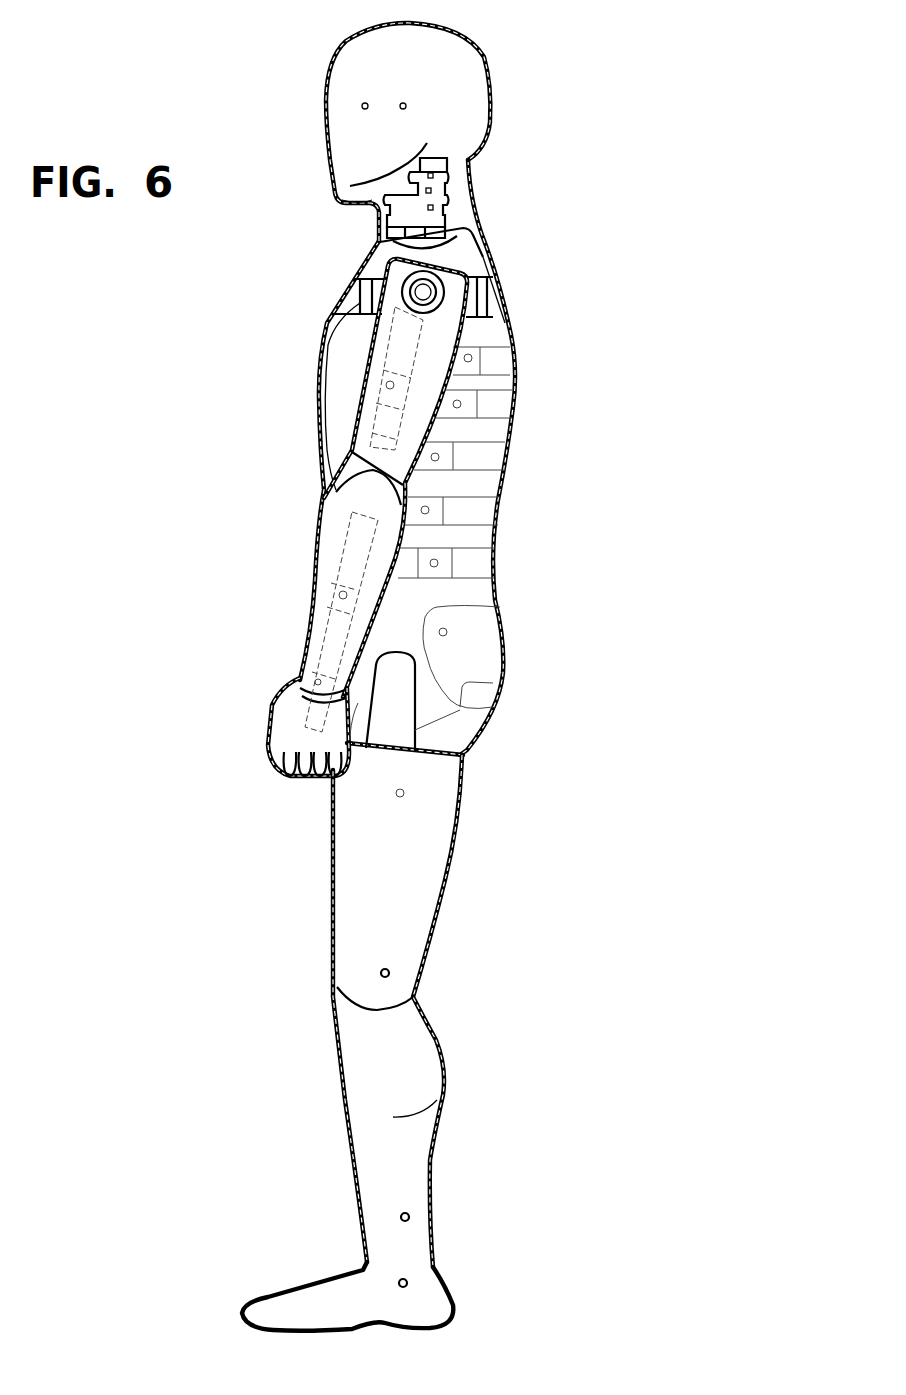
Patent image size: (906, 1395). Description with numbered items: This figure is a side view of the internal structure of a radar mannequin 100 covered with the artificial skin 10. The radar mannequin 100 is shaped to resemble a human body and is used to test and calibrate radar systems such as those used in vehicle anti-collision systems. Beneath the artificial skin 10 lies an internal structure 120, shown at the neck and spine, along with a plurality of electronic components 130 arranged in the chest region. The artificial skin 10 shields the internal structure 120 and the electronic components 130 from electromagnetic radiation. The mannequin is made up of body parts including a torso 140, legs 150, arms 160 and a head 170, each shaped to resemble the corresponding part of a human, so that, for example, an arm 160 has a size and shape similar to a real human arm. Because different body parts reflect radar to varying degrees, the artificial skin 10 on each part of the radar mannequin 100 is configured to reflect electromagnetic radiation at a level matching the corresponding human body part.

The radar mannequin 100 is at (557, 489).
The artificial skin 10 is at (505, 612).
The internal structure 120 is at (457, 203).
The electronic components 130 is at (498, 403).
The torso 140 is at (316, 394).
The legs 150 is at (330, 858).
The arms 160 is at (330, 547).
The head 170 is at (452, 36).